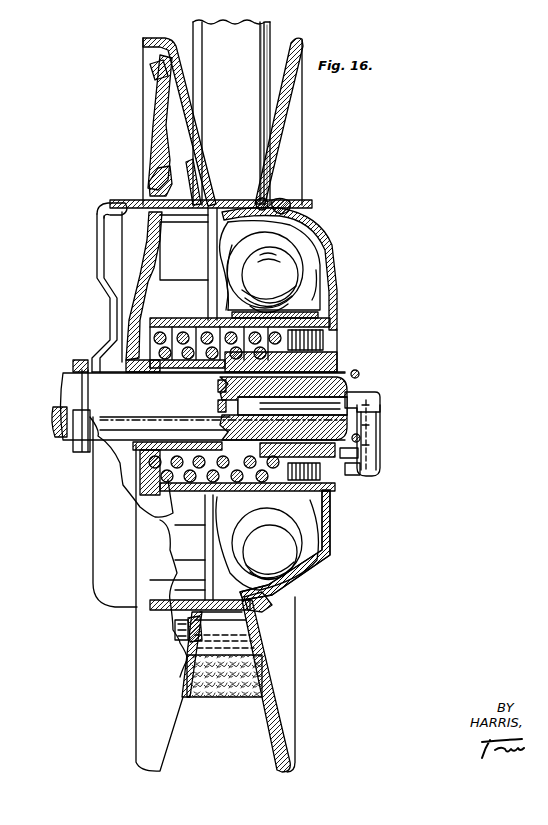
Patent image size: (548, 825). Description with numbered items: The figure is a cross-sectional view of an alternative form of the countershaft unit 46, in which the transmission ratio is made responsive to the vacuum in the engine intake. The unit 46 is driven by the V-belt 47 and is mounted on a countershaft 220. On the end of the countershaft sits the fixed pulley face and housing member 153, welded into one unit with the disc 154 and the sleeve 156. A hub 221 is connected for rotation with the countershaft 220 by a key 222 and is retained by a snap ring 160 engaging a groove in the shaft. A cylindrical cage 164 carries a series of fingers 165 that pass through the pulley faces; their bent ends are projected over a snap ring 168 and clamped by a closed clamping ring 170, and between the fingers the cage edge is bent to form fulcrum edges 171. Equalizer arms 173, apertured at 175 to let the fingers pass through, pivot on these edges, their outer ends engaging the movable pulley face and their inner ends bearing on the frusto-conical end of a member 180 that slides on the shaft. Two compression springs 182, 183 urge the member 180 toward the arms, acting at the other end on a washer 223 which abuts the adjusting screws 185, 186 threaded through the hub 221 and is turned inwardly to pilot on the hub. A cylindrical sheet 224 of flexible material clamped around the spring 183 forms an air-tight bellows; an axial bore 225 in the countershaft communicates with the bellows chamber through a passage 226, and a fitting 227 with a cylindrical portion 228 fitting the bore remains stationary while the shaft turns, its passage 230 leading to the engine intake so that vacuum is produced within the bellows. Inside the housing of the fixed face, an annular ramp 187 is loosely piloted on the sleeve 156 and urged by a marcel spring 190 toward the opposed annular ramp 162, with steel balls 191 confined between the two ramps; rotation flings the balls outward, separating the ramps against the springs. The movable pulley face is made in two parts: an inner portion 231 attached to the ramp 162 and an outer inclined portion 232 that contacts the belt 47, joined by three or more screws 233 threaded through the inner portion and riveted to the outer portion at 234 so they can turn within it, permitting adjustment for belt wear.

The countershaft unit 46 is at (323, 150).
The V-belt 47 is at (220, 698).
The pulley face and housing member 153 is at (282, 112).
The disc 154 is at (335, 510).
The sleeve 156 is at (175, 510).
The snap ring 160 is at (342, 370).
The annular ramp 162 is at (248, 262).
The cylindrical cage 164 is at (97, 250).
The fingers 165 is at (231, 200).
The snap ring 168 is at (265, 201).
The closed clamping ring 170 is at (282, 207).
The fulcrum edges 171 is at (122, 210).
The equalizer arms 173 is at (156, 125).
The aperture 175 is at (158, 190).
The member 180 is at (127, 360).
The compression spring 182 is at (128, 340).
The compression spring 183 is at (135, 318).
The adjusting screw 185 is at (325, 330).
The adjusting screw 186 is at (345, 470).
The annular ramp 187 is at (325, 272).
The marcel spring 190 is at (322, 243).
The steel balls 191 is at (290, 280).
The countershaft 220 is at (65, 393).
The hub 221 is at (338, 356).
The key 222 is at (340, 456).
The washer 223 is at (283, 408).
The cylindrical sheet 224 is at (180, 318).
The axial bore 225 is at (218, 405).
The passage 226 is at (218, 388).
The fitting 227 is at (380, 441).
The cylindrical portion 228 is at (362, 393).
The passage 230 is at (378, 416).
The inner portion 231 is at (212, 256).
The outer inclined portion 232 is at (185, 93).
The screws 233 is at (170, 634).
The rivet 234 is at (200, 637).